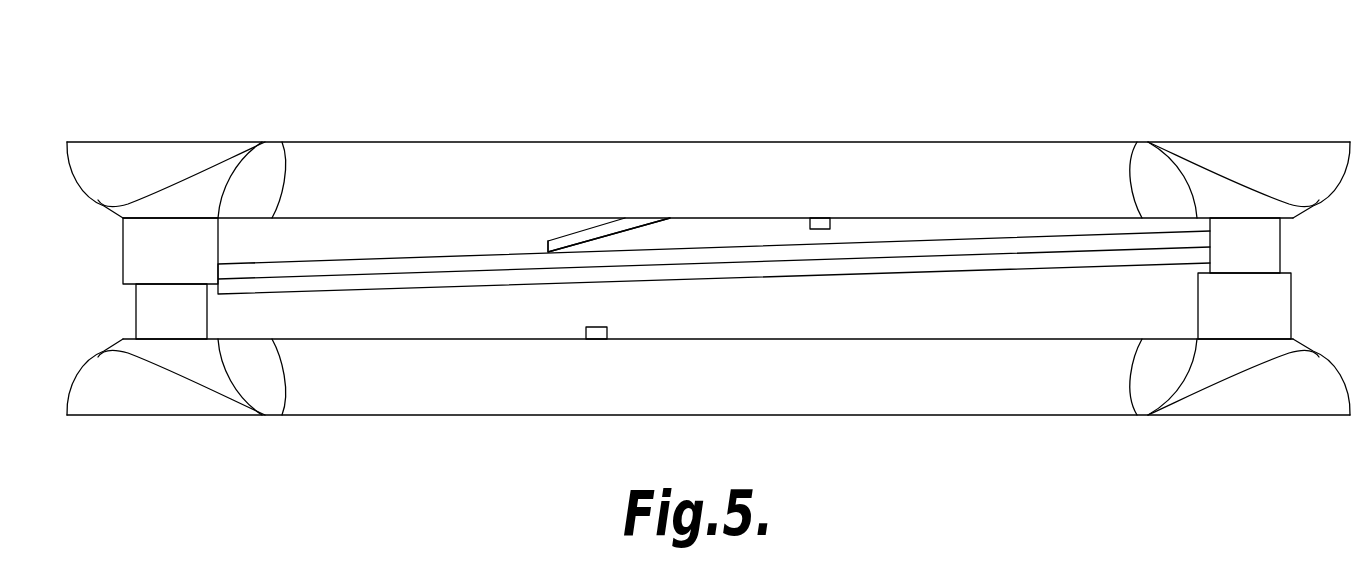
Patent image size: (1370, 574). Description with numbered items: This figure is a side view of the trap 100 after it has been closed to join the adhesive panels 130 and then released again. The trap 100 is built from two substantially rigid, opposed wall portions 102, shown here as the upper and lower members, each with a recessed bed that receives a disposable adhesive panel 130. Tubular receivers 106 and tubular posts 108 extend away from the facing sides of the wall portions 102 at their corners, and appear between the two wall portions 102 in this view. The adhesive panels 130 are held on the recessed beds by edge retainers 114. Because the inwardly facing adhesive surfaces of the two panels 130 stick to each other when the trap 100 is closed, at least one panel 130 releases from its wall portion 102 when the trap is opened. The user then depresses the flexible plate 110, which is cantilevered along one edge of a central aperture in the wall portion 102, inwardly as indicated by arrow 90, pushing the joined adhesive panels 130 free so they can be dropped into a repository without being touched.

The trap 100 is at (711, 242).
The wall portion 102 is at (1248, 142).
The tubular receiver 106 is at (1291, 303).
The tubular post 108 is at (1279, 248).
The adhesive panel 130 is at (367, 259).
The arrow 90 is at (561, 232).
The flexible plate 110 is at (590, 232).
The edge retainer 114 is at (598, 339).